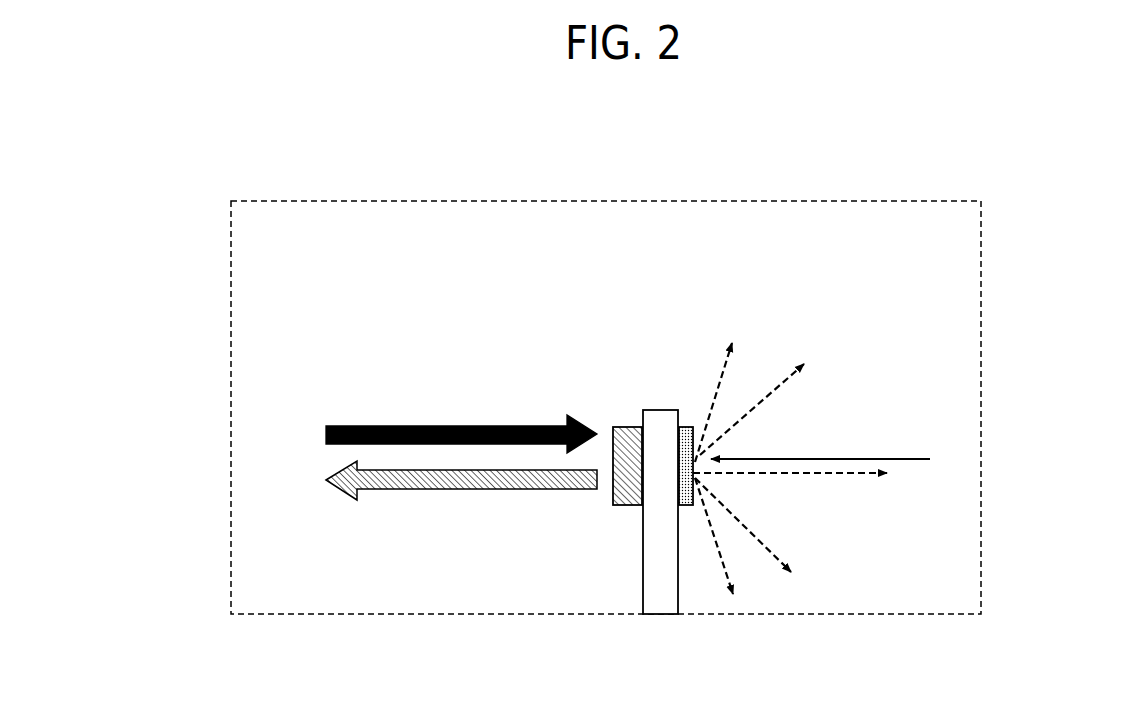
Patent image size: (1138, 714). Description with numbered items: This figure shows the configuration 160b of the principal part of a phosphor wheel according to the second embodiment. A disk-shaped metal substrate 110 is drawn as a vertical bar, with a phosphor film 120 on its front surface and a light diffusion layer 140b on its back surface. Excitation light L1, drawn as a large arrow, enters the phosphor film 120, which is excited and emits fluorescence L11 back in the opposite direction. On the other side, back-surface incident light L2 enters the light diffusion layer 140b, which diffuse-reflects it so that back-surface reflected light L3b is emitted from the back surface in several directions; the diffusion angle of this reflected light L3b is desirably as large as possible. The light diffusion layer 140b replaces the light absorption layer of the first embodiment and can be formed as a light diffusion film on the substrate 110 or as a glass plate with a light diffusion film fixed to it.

The substrate 110 is at (666, 410).
The phosphor film 120 is at (628, 427).
The light diffusion layer 140b is at (685, 427).
The configuration of the principal part 160b is at (981, 395).
The excitation light L1 is at (441, 434).
The fluorescence L11 is at (433, 480).
The back-surface incident light L2 is at (811, 448).
The back-surface reflected light L3b is at (778, 468).